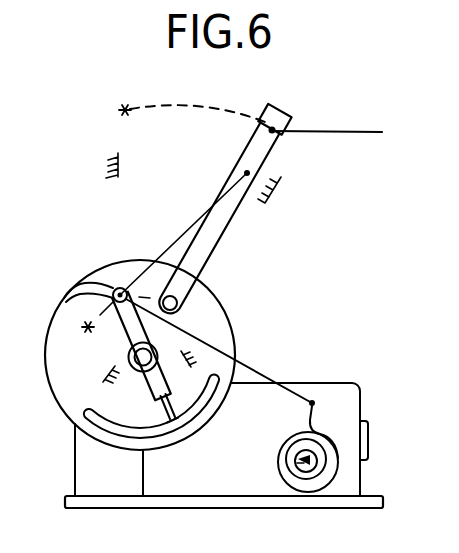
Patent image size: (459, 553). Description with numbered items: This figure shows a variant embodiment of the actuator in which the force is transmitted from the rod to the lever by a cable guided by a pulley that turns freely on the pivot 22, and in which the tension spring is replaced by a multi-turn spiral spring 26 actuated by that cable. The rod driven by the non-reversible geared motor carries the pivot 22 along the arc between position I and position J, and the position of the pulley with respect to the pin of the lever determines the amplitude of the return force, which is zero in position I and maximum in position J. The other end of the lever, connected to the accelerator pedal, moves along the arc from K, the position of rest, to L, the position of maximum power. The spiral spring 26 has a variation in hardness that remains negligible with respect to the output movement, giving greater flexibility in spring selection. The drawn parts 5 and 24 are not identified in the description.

The link rod 5 is at (362, 132).
The pivot 22 is at (84, 283).
The disc 24 is at (64, 298).
The multi-turn spiral spring 26 is at (317, 420).
The position I is at (184, 312).
The position J is at (79, 342).
The position K is at (126, 104).
The position L is at (271, 127).